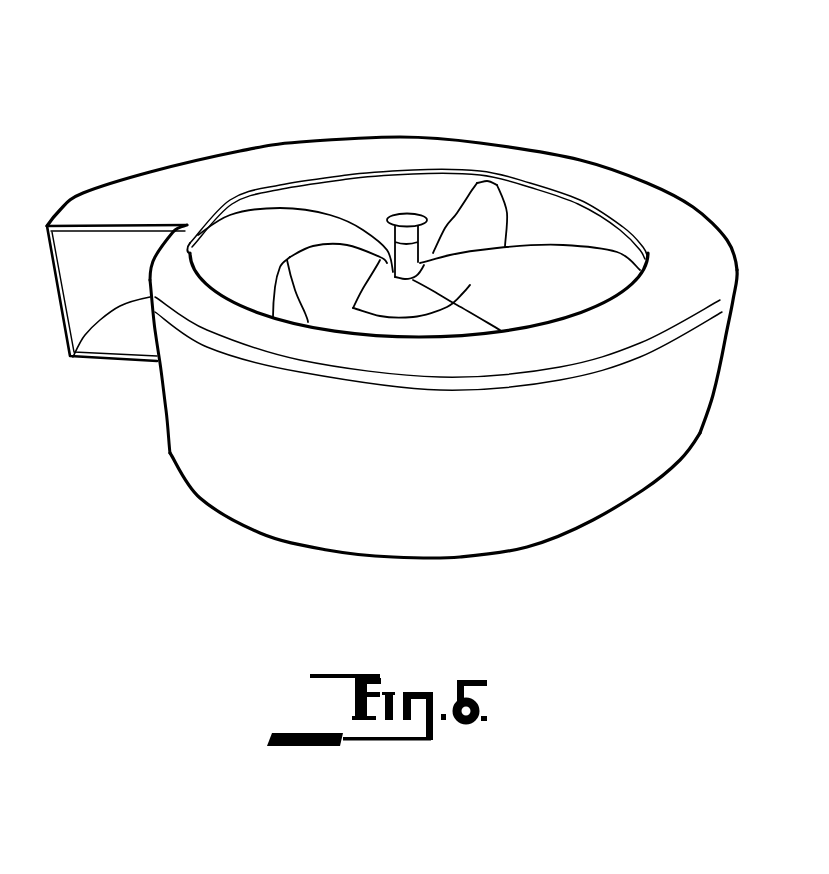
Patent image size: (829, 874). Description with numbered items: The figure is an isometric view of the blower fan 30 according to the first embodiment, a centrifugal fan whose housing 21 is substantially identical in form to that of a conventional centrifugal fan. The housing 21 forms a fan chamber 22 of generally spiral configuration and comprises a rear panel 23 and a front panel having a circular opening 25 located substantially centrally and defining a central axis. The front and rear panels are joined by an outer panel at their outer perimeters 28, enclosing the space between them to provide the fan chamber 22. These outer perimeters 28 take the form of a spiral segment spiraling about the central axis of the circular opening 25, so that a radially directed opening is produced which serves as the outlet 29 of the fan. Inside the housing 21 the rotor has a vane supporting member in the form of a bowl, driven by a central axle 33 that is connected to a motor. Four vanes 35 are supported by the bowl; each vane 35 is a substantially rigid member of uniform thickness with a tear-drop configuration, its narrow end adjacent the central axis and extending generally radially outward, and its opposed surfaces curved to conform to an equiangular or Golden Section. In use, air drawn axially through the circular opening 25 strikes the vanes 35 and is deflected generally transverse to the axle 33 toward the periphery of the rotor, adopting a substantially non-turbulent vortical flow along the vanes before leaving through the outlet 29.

The blower fan 30 is at (316, 98).
The housing 21 is at (645, 460).
The fan chamber 22 is at (565, 215).
The rear panel 23 is at (120, 343).
The circular opening 25 is at (523, 183).
The outer perimeters 28 is at (203, 498).
The outlet 29 is at (117, 222).
The central axle 33 is at (410, 250).
The vanes 35 is at (602, 272).